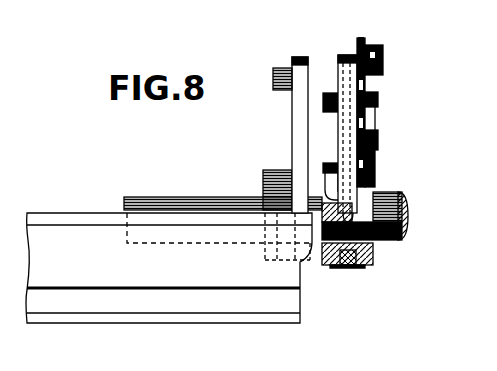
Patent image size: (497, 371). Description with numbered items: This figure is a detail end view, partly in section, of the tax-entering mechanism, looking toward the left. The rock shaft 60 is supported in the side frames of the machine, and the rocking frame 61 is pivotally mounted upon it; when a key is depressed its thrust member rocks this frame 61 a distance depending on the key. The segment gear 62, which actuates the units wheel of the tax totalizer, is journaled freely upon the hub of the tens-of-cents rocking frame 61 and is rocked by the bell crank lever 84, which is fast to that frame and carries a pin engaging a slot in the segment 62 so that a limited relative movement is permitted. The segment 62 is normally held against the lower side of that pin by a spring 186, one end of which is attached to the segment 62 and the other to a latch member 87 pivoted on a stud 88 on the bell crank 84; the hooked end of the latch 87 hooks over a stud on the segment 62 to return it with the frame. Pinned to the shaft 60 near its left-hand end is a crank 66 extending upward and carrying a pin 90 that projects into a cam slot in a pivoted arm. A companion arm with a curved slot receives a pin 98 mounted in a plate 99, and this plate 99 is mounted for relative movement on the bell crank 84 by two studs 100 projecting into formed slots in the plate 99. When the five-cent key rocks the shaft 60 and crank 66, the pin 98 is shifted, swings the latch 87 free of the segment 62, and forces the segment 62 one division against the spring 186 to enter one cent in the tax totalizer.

The rock shaft 60 is at (145, 198).
The rocking frame 61 is at (50, 214).
The segment gear 62 is at (345, 57).
The crank 66 is at (292, 110).
The bell crank lever 84 is at (345, 128).
The latch member 87 is at (362, 38).
The stud 88 is at (373, 80).
The pin 90 is at (273, 75).
The pin 98 is at (333, 93).
The plate 99 is at (375, 113).
The studs 100 is at (378, 98).
The spring 186 is at (380, 60).